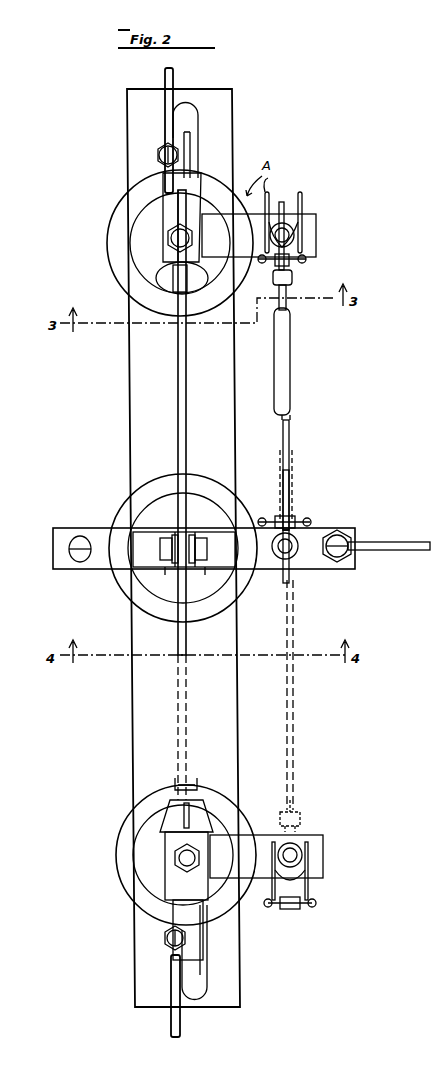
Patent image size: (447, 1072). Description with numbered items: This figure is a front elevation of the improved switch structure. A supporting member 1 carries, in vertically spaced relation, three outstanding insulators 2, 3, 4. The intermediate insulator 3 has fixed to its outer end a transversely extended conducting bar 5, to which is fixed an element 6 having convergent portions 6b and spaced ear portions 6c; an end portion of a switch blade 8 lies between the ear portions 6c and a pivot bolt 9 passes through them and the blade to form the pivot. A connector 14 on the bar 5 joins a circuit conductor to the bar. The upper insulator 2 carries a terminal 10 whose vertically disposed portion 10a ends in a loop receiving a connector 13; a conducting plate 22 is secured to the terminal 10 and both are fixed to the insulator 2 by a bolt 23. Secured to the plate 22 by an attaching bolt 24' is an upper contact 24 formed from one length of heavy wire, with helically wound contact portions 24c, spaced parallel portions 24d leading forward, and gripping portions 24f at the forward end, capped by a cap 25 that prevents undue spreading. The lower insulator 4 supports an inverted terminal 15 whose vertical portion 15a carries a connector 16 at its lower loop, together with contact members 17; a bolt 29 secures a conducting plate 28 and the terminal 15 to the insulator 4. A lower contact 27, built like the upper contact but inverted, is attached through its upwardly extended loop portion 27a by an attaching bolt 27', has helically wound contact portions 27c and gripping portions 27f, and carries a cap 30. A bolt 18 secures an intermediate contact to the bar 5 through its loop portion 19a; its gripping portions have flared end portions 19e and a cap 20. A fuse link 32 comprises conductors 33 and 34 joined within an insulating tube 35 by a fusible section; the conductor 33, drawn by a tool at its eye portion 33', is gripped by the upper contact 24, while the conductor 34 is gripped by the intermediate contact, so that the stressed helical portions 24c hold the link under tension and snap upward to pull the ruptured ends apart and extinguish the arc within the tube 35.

The supporting member 1 is at (232, 135).
The insulator 2 is at (108, 249).
The insulator 3 is at (120, 588).
The insulator 4 is at (126, 822).
The bar 5 is at (88, 532).
The element 6 is at (225, 560).
The convergent portions 6b is at (166, 570).
The ear portions 6c is at (176, 534).
The switch blade 8 is at (187, 400).
The pivot bolt 9 is at (160, 549).
The terminal 10 is at (211, 204).
The vertically disposed portion 10a is at (165, 210).
The connector 13 is at (157, 159).
The connector 14 is at (345, 535).
The terminal 15 is at (156, 868).
The vertical portion 15a is at (176, 888).
The connector 16 is at (166, 943).
The contact members 17 is at (190, 778).
The bolt 18 is at (296, 556).
The loop portion 19a is at (272, 547).
The flared end portions 19e is at (264, 518).
The cap 20 is at (290, 512).
The plate 22 is at (316, 225).
The bolt 23 is at (170, 245).
The upper contact 24 is at (302, 220).
The attaching bolt 24' is at (310, 240).
The helically wound contact portions 24c is at (270, 236).
The spaced parallel portions 24d is at (270, 193).
The gripping portions 24f is at (300, 266).
The cap 25 is at (292, 284).
The lower contact 27 is at (313, 872).
The attaching bolt 27' is at (306, 820).
The loop portion 27a is at (303, 856).
The helically wound contact portions 27c is at (310, 890).
The gripping portions 27f is at (313, 906).
The plate 28 is at (323, 840).
The bolt 29 is at (176, 856).
The cap 30 is at (293, 910).
The fuse link 32 is at (298, 408).
The conductor 33 is at (299, 307).
The eye portion 33' is at (258, 236).
The conductor 34 is at (290, 449).
The tube 35 is at (290, 350).